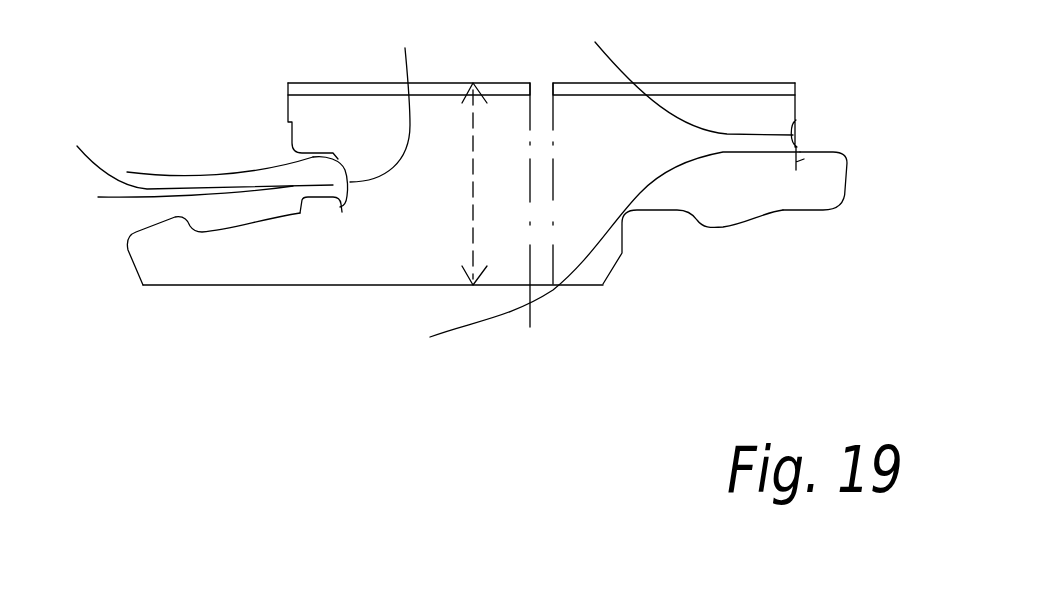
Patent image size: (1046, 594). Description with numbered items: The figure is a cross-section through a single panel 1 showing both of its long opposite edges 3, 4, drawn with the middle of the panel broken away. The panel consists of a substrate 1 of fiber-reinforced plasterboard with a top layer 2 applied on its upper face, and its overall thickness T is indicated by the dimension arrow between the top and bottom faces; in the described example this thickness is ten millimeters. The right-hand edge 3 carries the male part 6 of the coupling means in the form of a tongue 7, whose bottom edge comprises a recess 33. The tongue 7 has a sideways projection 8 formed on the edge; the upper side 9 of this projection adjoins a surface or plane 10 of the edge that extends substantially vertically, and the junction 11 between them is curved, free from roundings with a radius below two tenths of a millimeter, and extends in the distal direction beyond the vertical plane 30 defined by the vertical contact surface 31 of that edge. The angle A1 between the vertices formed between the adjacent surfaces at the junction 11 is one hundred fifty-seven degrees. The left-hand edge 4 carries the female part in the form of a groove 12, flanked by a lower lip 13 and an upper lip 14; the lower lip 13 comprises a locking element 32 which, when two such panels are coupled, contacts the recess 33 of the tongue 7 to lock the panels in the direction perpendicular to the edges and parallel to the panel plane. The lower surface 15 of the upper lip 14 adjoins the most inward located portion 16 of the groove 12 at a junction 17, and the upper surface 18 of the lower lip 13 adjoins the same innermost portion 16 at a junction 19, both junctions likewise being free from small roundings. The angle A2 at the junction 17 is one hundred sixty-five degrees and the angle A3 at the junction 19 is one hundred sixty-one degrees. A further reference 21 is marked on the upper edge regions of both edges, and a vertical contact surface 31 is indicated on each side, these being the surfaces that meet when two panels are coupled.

The substrate 1 is at (418, 200).
The top layer 2 is at (441, 90).
The edge 3 is at (842, 267).
The edge 4 is at (198, 112).
The male part 6 is at (653, 218).
The tongue 7 is at (737, 258).
The sideways projection 8 is at (825, 183).
The upper side 9 is at (812, 151).
The surface or plane of the edge 10 is at (681, 78).
The junction 11 is at (613, 258).
The groove 12 is at (181, 189).
The lower lip 13 is at (233, 257).
The upper lip 14 is at (318, 128).
The lower surface of the upper lip 15 is at (213, 158).
The most inward located portion of the groove 16 is at (386, 98).
The junction 17 is at (338, 160).
The upper surface of the lower lip 18 is at (253, 225).
The junction 19 is at (342, 212).
The top surface 21 is at (287, 100).
The vertical plane 30 is at (847, 171).
The vertical contact surface 31 is at (287, 117).
The locking element 32 is at (178, 224).
The recess 33 is at (807, 195).
The angle A1 is at (797, 148).
The angle A2 is at (189, 154).
The angle A3 is at (300, 213).
The thickness T is at (482, 184).